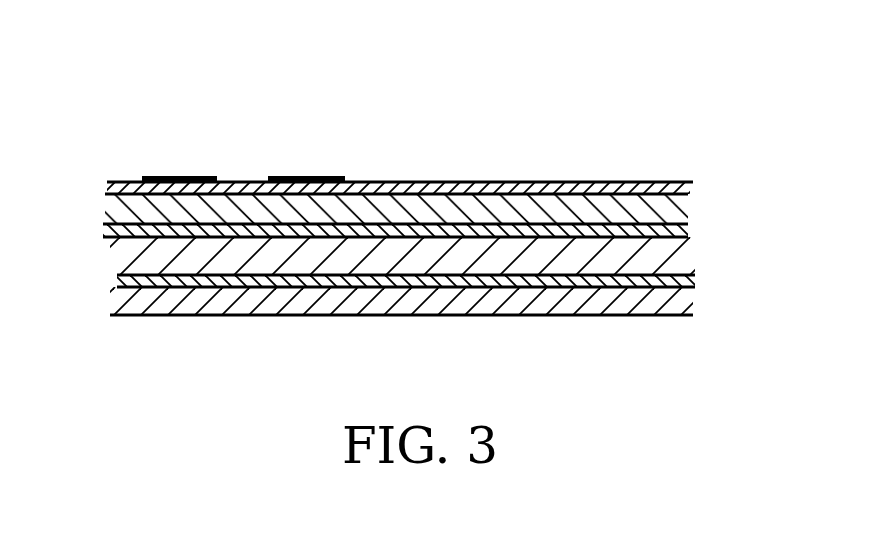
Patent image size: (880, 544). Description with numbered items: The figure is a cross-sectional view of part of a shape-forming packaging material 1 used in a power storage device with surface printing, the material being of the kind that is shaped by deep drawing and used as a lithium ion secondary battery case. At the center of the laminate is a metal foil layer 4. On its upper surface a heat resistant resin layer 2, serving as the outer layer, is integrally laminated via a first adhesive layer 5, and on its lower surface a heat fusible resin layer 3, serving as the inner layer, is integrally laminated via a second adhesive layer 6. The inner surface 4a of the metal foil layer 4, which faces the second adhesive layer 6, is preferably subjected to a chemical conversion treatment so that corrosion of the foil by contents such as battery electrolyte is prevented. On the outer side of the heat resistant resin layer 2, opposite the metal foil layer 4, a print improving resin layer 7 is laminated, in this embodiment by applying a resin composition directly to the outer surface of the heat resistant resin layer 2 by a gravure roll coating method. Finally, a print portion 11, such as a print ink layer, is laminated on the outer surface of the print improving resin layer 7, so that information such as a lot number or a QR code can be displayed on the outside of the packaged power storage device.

The shape-forming packaging material 1 is at (447, 233).
The heat resistant resin layer 2 is at (673, 208).
The heat fusible resin layer 3 is at (682, 300).
The metal foil layer 4 is at (680, 248).
The inner surface 4a is at (593, 277).
The first adhesive layer 5 is at (685, 228).
The second adhesive layer 6 is at (695, 282).
The print improving resin layer 7 is at (688, 192).
The print portion 11 is at (180, 176).